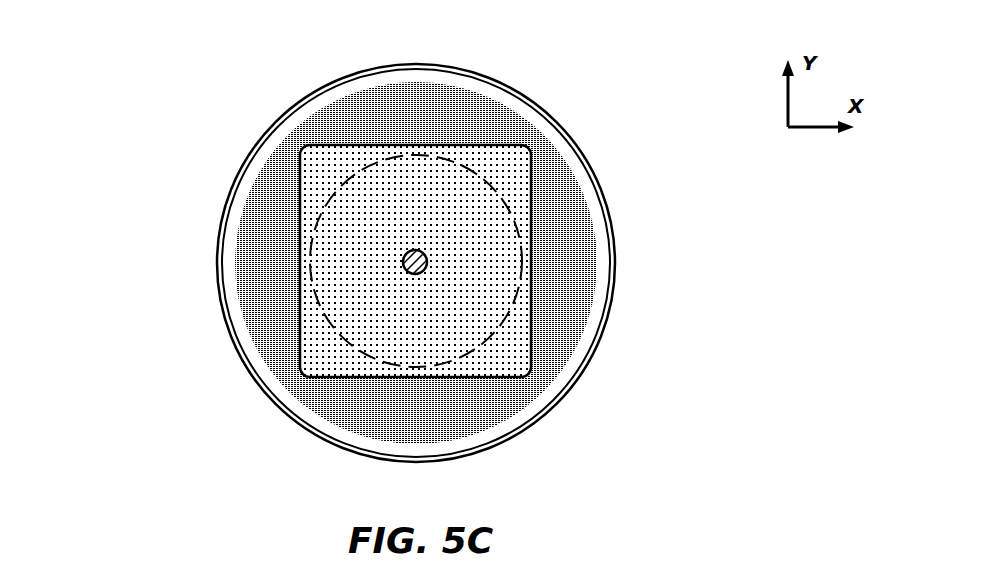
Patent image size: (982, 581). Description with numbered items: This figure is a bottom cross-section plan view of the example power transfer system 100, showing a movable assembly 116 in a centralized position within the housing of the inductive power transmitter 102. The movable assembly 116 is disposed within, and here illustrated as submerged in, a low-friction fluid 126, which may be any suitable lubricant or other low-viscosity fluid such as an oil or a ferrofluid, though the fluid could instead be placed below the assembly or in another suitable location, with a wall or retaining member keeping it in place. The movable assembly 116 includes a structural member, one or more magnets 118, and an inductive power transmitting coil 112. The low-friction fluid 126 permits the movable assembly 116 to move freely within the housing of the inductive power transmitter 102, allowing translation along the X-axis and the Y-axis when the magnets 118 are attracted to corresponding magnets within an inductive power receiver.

The power transfer system 100 is at (93, 28).
The inductive power transmitter 102 is at (218, 263).
The inductive power transmitting coil 112 is at (522, 268).
The movable assembly 116 is at (533, 208).
The magnets 118 is at (403, 260).
The low-friction fluid 126 is at (525, 113).